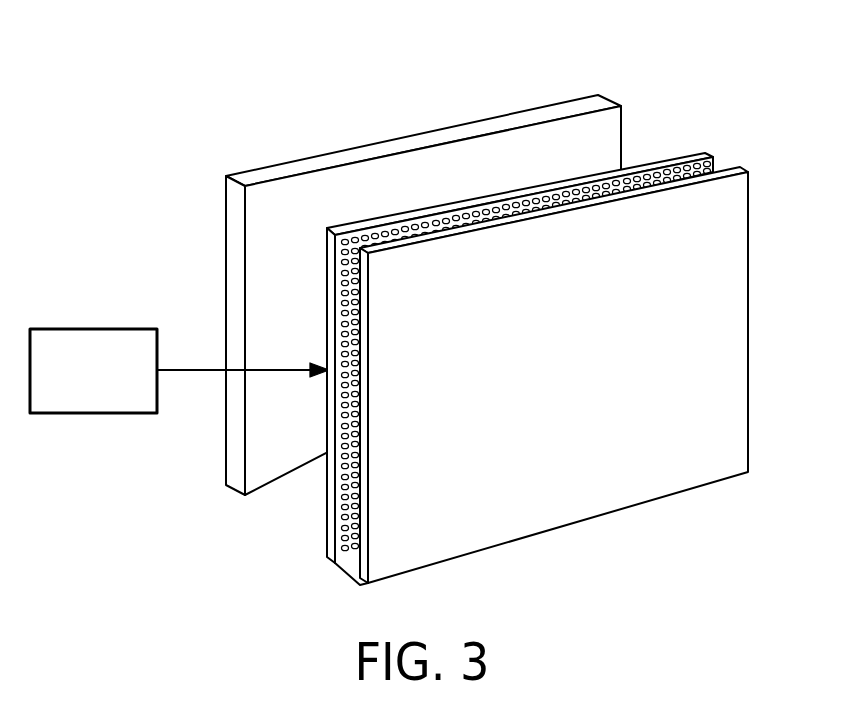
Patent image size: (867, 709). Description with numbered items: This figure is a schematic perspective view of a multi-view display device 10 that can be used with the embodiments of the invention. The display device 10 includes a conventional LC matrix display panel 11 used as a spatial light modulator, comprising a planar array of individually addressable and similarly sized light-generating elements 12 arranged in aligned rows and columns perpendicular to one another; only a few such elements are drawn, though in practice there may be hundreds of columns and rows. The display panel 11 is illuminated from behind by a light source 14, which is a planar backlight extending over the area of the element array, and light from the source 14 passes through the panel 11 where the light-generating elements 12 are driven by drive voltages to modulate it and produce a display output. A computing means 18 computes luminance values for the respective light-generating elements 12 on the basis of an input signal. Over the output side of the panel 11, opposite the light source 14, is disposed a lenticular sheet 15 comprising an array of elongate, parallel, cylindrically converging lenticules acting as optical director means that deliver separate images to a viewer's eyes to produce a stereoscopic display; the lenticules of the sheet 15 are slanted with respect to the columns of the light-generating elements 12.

The display device 10 is at (314, 108).
The LC matrix display panel 11 is at (650, 163).
The light-generating elements 12 is at (689, 165).
The light source 14 is at (555, 108).
The lenticular sheet 15 is at (749, 284).
The computing means 18 is at (97, 329).